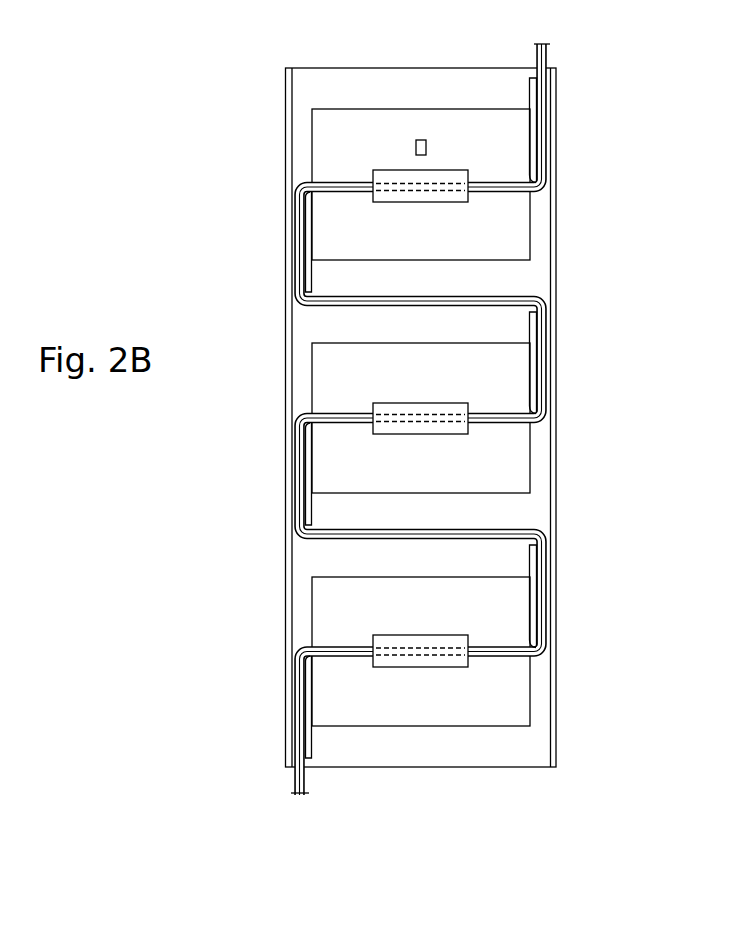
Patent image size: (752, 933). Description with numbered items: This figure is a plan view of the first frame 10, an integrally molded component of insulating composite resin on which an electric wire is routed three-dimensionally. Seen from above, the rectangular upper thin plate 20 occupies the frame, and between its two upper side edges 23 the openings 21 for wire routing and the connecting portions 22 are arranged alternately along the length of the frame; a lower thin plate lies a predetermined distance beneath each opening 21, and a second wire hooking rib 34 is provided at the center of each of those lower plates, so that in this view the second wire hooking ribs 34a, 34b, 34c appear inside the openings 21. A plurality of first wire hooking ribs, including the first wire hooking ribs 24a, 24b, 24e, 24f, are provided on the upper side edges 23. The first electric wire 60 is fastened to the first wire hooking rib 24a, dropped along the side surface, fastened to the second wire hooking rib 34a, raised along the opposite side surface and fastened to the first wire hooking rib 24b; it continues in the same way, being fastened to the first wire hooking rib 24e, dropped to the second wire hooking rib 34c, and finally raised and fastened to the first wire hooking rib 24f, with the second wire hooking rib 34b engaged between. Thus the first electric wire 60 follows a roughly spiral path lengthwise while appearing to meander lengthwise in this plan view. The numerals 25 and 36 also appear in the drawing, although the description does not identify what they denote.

The first frame 10 is at (200, 258).
The upper thin plate 20 is at (321, 68).
The opening 21 is at (327, 146).
The connecting portion 22 is at (352, 330).
The upper side edge 23 is at (538, 272).
The first wire hooking rib 24a is at (311, 716).
The first wire hooking rib 24b is at (536, 614).
The first wire hooking rib 24e is at (311, 237).
The first wire hooking rib 24f is at (536, 140).
The side wall of housing 25 is at (556, 512).
The second wire hooking rib 34 is at (428, 435).
The second wire hooking rib 34a is at (443, 667).
The second wire hooking rib 34b is at (442, 434).
The second wire hooking rib 34c is at (443, 202).
The temperature sensor 36 is at (421, 140).
The first electric wire 60 is at (549, 51).